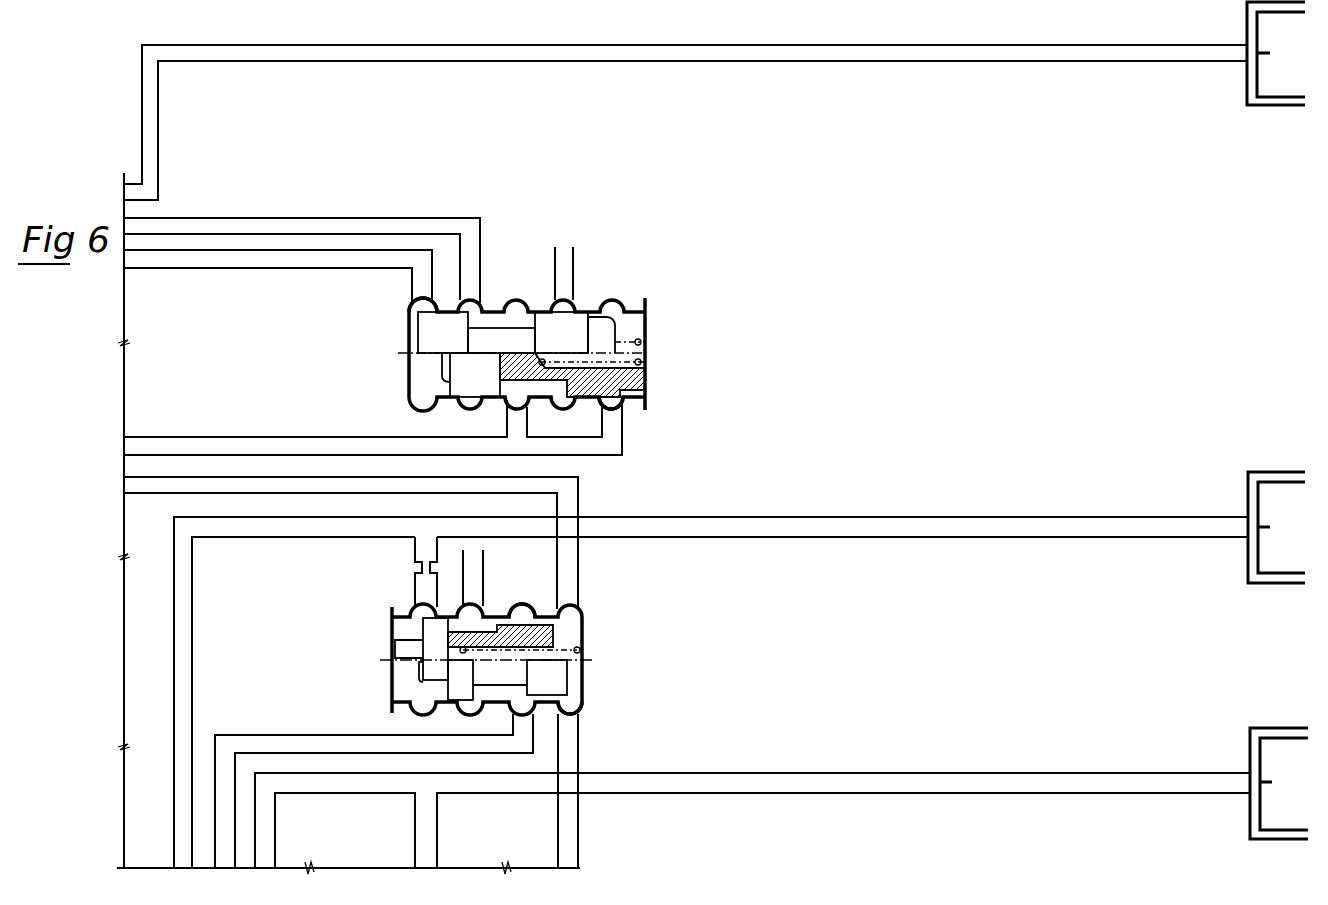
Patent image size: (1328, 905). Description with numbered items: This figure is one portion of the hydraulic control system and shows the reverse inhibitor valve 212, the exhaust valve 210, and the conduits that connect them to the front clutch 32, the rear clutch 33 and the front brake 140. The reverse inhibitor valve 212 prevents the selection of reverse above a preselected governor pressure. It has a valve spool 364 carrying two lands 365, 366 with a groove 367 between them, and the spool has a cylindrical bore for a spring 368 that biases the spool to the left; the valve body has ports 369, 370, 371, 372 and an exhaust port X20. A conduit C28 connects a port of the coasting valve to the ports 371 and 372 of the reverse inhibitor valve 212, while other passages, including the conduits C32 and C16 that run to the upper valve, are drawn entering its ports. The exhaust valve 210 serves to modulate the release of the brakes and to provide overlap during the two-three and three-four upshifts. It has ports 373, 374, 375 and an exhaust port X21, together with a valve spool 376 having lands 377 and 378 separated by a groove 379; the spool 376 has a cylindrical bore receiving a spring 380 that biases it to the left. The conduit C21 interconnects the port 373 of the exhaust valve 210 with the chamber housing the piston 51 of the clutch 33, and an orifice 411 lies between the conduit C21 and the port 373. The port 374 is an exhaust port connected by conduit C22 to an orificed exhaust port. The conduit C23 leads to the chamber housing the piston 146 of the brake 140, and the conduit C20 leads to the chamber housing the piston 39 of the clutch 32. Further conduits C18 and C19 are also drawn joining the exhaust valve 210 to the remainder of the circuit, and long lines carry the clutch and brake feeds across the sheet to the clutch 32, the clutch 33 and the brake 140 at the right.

The conduit C20 is at (157, 138).
The conduit C32 is at (300, 222).
The conduit C16 is at (302, 263).
The conduit C28 is at (235, 443).
The conduit C18 is at (283, 482).
The conduit C21 is at (268, 523).
The conduit C22 is at (258, 740).
The conduit C23 is at (295, 788).
The conduit C19 is at (575, 758).
The exhaust port X20 is at (575, 252).
The exhaust port X21 is at (475, 592).
The orifice 411 is at (418, 565).
The reverse inhibitor valve 212 is at (661, 312).
The land 365 is at (418, 325).
The port 369 is at (420, 305).
The groove 367 is at (490, 307).
The land 366 is at (542, 305).
The valve spool 364 is at (612, 312).
The spring 368 is at (645, 362).
The port 370 is at (470, 403).
The port 371 is at (517, 405).
The port 372 is at (613, 407).
The exhaust valve 210 is at (597, 617).
The port 373 is at (425, 607).
The valve spool 376 is at (397, 648).
The land 377 is at (422, 668).
The groove 379 is at (485, 687).
The exhaust port 374 is at (523, 618).
The spring 380 is at (583, 645).
The land 378 is at (568, 673).
The port 375 is at (568, 703).
The clutch 32 is at (1266, 91).
The piston 39 is at (1258, 68).
The clutch 33 is at (1267, 487).
The piston 51 is at (1260, 553).
The brake 140 is at (1272, 746).
The piston 146 is at (1260, 810).